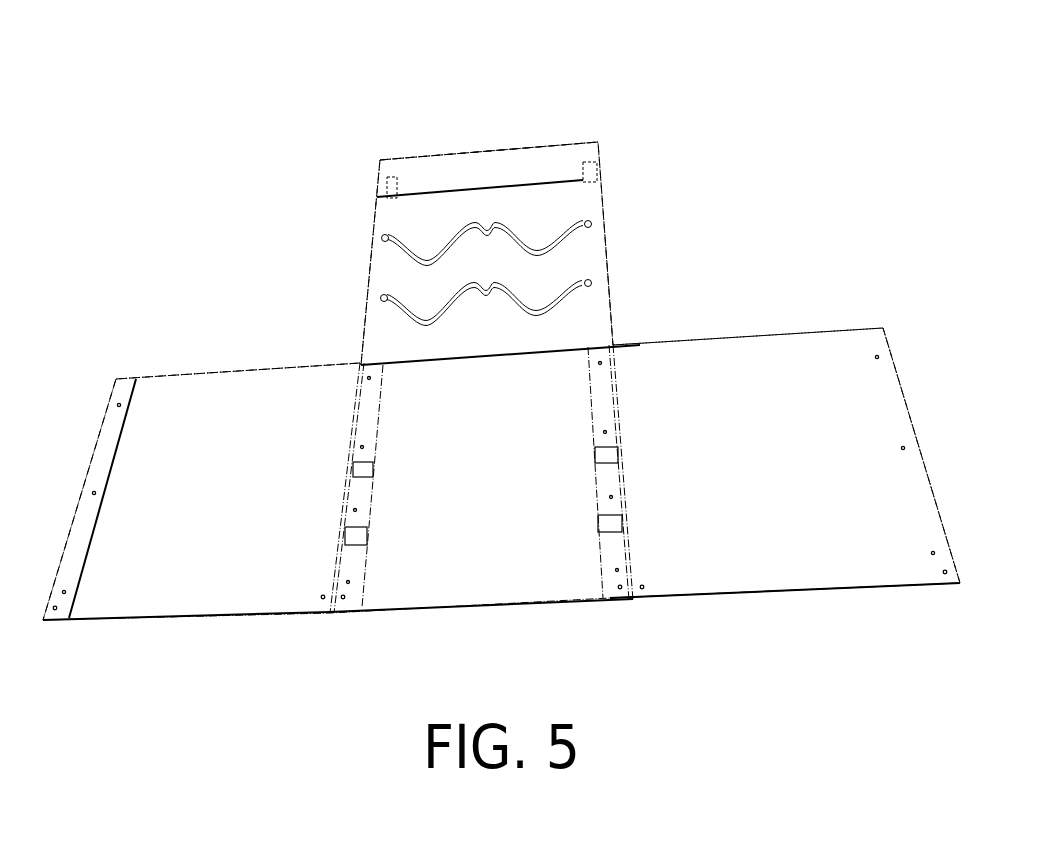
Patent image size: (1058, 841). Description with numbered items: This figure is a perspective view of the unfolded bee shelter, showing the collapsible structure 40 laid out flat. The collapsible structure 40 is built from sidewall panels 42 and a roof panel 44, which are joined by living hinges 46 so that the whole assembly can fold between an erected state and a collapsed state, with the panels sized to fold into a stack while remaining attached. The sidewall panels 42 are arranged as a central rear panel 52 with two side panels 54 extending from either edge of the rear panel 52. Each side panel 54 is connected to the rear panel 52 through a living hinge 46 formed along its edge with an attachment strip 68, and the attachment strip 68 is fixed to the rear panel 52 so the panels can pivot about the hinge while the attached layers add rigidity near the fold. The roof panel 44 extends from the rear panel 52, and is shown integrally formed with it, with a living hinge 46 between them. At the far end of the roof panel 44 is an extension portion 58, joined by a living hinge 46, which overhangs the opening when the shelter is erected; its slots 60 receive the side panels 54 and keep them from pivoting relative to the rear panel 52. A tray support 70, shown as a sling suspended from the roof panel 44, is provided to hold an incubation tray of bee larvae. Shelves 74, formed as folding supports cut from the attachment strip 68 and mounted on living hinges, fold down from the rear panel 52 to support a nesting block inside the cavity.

The collapsible structure 40 is at (683, 150).
The sidewall panels 42 is at (228, 400).
The roof panel 44 is at (388, 268).
The living hinges 46 is at (452, 355).
The rear panel 52 is at (437, 557).
The side panels 54 is at (233, 590).
The extension portion 58 is at (412, 177).
The slots 60 is at (583, 163).
The attachment strip 68 is at (597, 390).
The tray support 70 is at (505, 230).
The shelves 74 is at (608, 523).